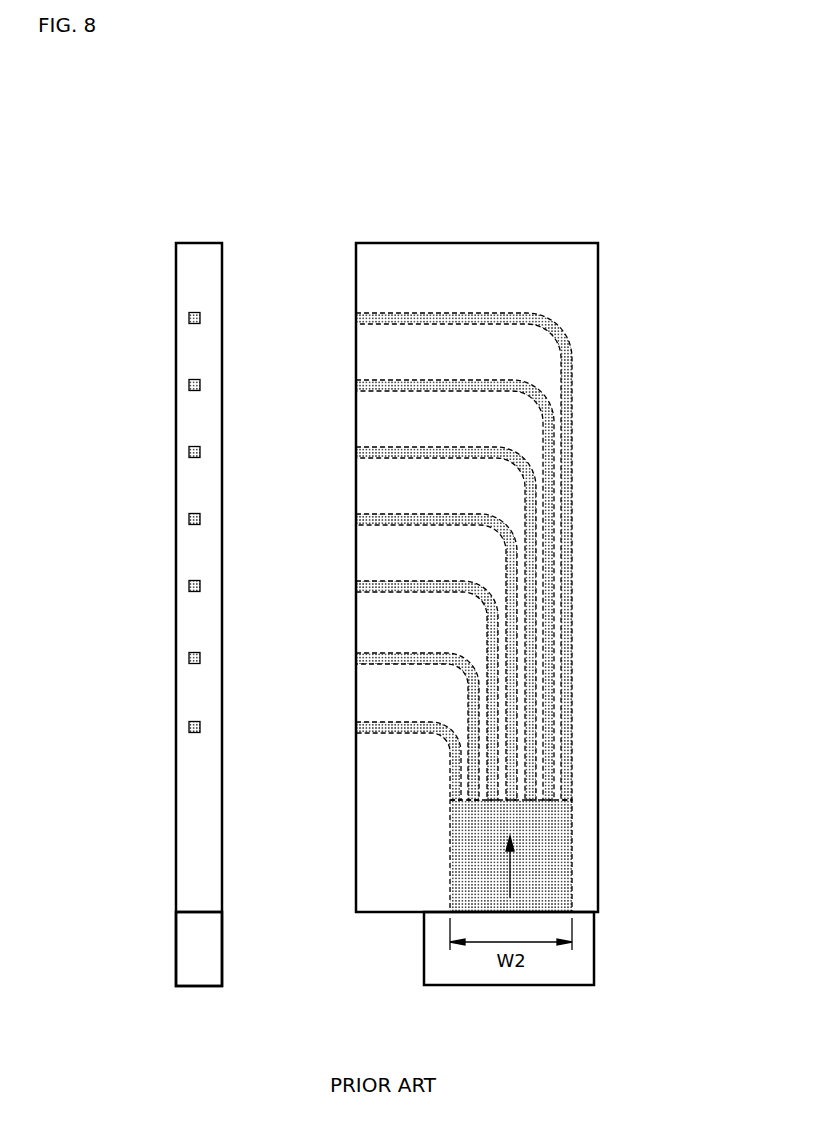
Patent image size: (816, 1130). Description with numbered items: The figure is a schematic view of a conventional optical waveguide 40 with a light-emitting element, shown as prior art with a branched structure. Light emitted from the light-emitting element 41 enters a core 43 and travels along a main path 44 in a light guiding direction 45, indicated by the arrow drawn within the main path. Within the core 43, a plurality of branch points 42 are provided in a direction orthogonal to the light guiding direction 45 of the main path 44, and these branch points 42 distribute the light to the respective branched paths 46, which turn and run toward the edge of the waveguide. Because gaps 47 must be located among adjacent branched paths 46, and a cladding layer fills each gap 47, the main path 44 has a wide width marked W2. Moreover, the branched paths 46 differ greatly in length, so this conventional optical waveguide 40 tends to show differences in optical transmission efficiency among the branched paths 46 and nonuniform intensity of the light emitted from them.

The optical waveguide 40 is at (261, 207).
The light-emitting element 41 is at (175, 986).
The branch points 42 is at (558, 803).
The core 43 is at (450, 836).
The main path 44 is at (540, 877).
The light guiding direction 45 is at (510, 876).
The branched paths 46 is at (189, 318).
The gaps 47 is at (555, 752).